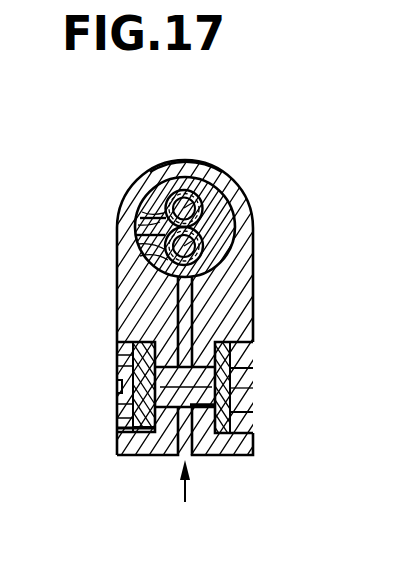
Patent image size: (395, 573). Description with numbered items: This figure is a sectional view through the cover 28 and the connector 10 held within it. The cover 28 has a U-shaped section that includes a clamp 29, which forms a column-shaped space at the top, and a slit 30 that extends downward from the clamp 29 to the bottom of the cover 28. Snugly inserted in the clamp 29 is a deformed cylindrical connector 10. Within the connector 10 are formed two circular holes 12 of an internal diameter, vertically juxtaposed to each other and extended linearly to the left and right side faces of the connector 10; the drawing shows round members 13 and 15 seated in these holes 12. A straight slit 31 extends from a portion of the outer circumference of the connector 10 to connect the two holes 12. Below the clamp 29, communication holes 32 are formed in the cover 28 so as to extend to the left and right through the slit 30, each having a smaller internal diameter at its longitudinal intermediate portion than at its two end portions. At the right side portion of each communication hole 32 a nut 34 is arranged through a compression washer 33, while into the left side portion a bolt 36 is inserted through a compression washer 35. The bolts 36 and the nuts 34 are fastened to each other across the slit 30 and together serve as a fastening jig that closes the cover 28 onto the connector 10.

The connector 10 is at (254, 212).
The circular holes 12 is at (172, 163).
The conductor 13 is at (215, 173).
The conductor 15 is at (232, 263).
The cover 28 is at (130, 313).
The clamp 29 is at (140, 248).
The slit 30 is at (188, 498).
The straight slit 31 is at (140, 232).
The communication holes 32 is at (225, 372).
The compression washers 33 is at (228, 426).
The nuts 34 is at (237, 393).
The compression washers 35 is at (128, 410).
The bolts 36 is at (118, 364).